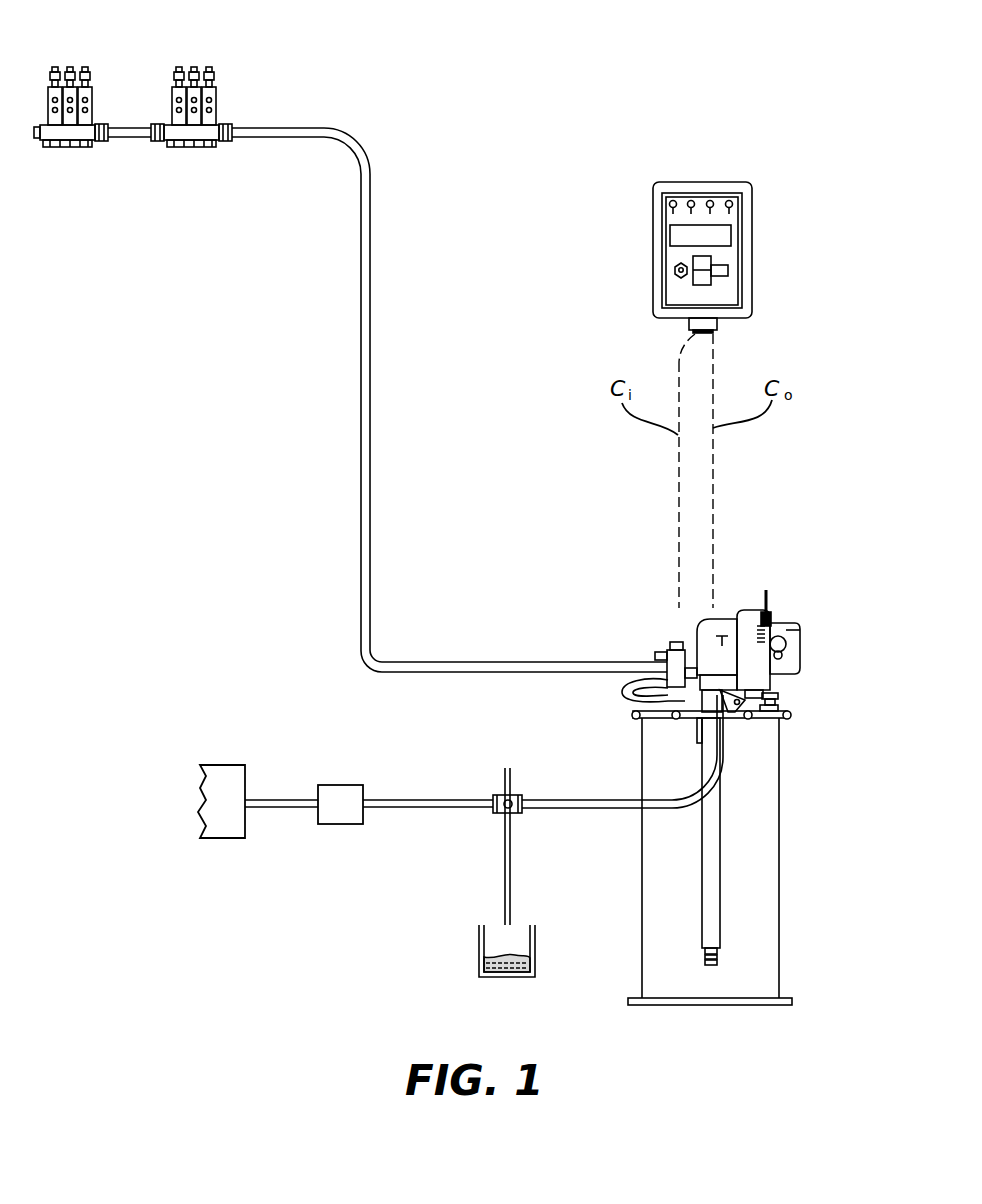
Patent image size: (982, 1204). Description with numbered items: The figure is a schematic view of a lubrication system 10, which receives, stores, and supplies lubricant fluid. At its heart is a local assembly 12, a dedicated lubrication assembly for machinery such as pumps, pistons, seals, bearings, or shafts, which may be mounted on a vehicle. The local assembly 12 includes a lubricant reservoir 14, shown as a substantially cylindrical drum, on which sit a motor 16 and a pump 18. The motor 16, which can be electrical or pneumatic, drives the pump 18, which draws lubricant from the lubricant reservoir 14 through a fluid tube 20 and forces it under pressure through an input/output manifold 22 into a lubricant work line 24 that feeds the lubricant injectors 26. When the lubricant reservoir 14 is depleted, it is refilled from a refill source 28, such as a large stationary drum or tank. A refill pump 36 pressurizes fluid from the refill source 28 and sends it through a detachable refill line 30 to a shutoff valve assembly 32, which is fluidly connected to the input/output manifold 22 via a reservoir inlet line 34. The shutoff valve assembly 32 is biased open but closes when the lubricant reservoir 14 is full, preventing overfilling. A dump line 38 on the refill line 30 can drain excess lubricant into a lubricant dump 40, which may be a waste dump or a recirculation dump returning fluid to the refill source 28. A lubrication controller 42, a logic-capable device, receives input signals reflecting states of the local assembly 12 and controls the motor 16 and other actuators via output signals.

The lubrication system 10 is at (440, 96).
The local assembly 12 is at (800, 733).
The lubricant reservoir 14 is at (750, 882).
The motor 16 is at (672, 612).
The pump 18 is at (697, 733).
The fluid tube 20 is at (706, 925).
The input/output manifold 22 is at (657, 662).
The lubricant work line 24 is at (359, 238).
The lubricant injectors 26 is at (92, 97).
The refill source 28 is at (226, 815).
The refill line 30 is at (580, 812).
The shutoff valve assembly 32 is at (730, 738).
The reservoir inlet line 34 is at (622, 690).
The refill pump 36 is at (335, 811).
The dump line 38 is at (505, 855).
The lubricant dump 40 is at (500, 978).
The lubrication controller 42 is at (747, 257).